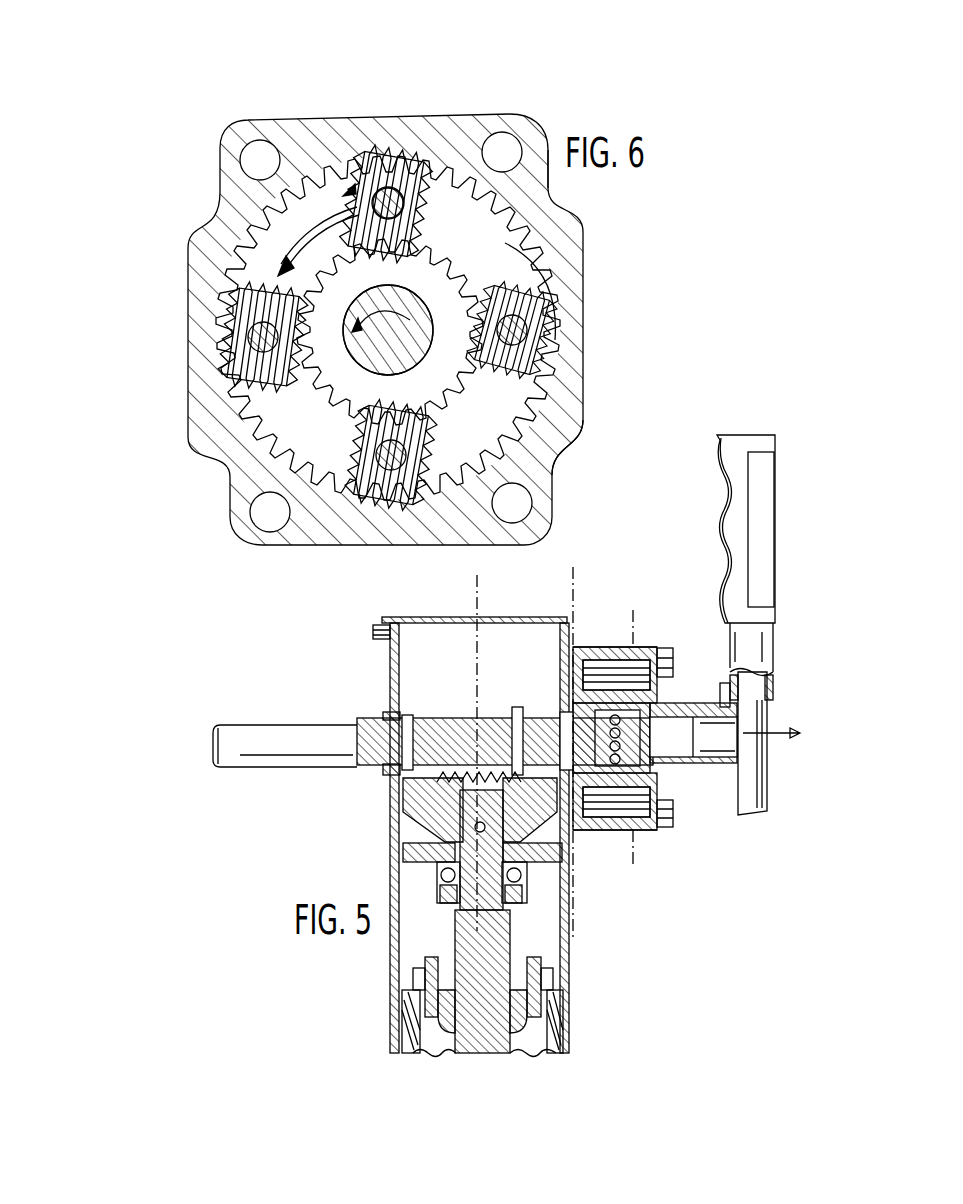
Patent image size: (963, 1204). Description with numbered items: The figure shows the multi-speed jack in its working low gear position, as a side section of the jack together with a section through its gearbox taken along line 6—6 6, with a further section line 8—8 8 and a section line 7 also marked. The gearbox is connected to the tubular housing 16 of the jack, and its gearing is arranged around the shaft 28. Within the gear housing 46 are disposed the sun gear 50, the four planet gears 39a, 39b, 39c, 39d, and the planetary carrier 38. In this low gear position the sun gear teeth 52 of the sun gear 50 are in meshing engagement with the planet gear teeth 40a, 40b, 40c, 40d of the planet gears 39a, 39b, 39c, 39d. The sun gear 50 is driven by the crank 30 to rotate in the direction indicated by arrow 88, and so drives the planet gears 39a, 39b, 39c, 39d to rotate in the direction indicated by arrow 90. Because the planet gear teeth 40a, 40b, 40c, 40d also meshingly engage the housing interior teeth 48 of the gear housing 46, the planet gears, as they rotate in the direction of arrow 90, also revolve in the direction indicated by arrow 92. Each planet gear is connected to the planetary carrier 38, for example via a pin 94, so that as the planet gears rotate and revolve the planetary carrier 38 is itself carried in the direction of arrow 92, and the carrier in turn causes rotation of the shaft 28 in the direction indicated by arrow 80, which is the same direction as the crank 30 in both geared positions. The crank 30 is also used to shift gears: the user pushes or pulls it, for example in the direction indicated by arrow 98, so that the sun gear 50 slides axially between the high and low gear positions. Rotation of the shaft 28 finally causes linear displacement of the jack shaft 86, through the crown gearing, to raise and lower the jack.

In FIG. 6, the gear housing 46 is at (290, 118).
In FIG. 6, the housing interior teeth 48 is at (548, 138).
In FIG. 6, the planetary carrier 38 is at (443, 235).
In FIG. 5, the planetary carrier 38 is at (592, 647).
In FIG. 6, the arrow 88 is at (345, 378).
In FIG. 6, the sun gear teeth 52 is at (455, 296).
In FIG. 6, the arrow 80 is at (480, 425).
In FIG. 6, the planet gear 39a is at (240, 328).
In FIG. 6, the planet gear 39b is at (362, 165).
In FIG. 5, the planet gear 39b is at (607, 648).
In FIG. 6, the planet gear 39c is at (545, 338).
In FIG. 6, the planet gear 39d is at (365, 492).
In FIG. 5, the planet gear 39d is at (650, 825).
In FIG. 6, the planet gear teeth 40a is at (270, 285).
In FIG. 6, the planet gear teeth 40b is at (283, 207).
In FIG. 6, the planet gear teeth 40c is at (548, 374).
In FIG. 6, the planet gear teeth 40d is at (388, 495).
In FIG. 6, the pin 94 is at (390, 165).
In FIG. 6, the arrow 90 is at (320, 175).
In FIG. 6, the arrow 92 is at (272, 228).
In FIG. 6, the sun gear 50 is at (440, 280).
In FIG. 5, the sun gear 50 is at (690, 702).
In FIG. 6, the shaft 28 is at (572, 446).
In FIG. 5, the shaft 28 is at (450, 722).
In FIG. 5, the tubular housing 16 is at (590, 832).
In FIG. 5, the jack shaft 86 is at (483, 1014).
In FIG. 5, the crank 30 is at (773, 638).
In FIG. 5, the arrow 98 is at (778, 740).
In FIG. 5, the section line 7- 7 is at (573, 567).
In FIG. 5, the section line 8— 8 is at (474, 579).
In FIG. 5, the section line 6— 6 is at (633, 610).